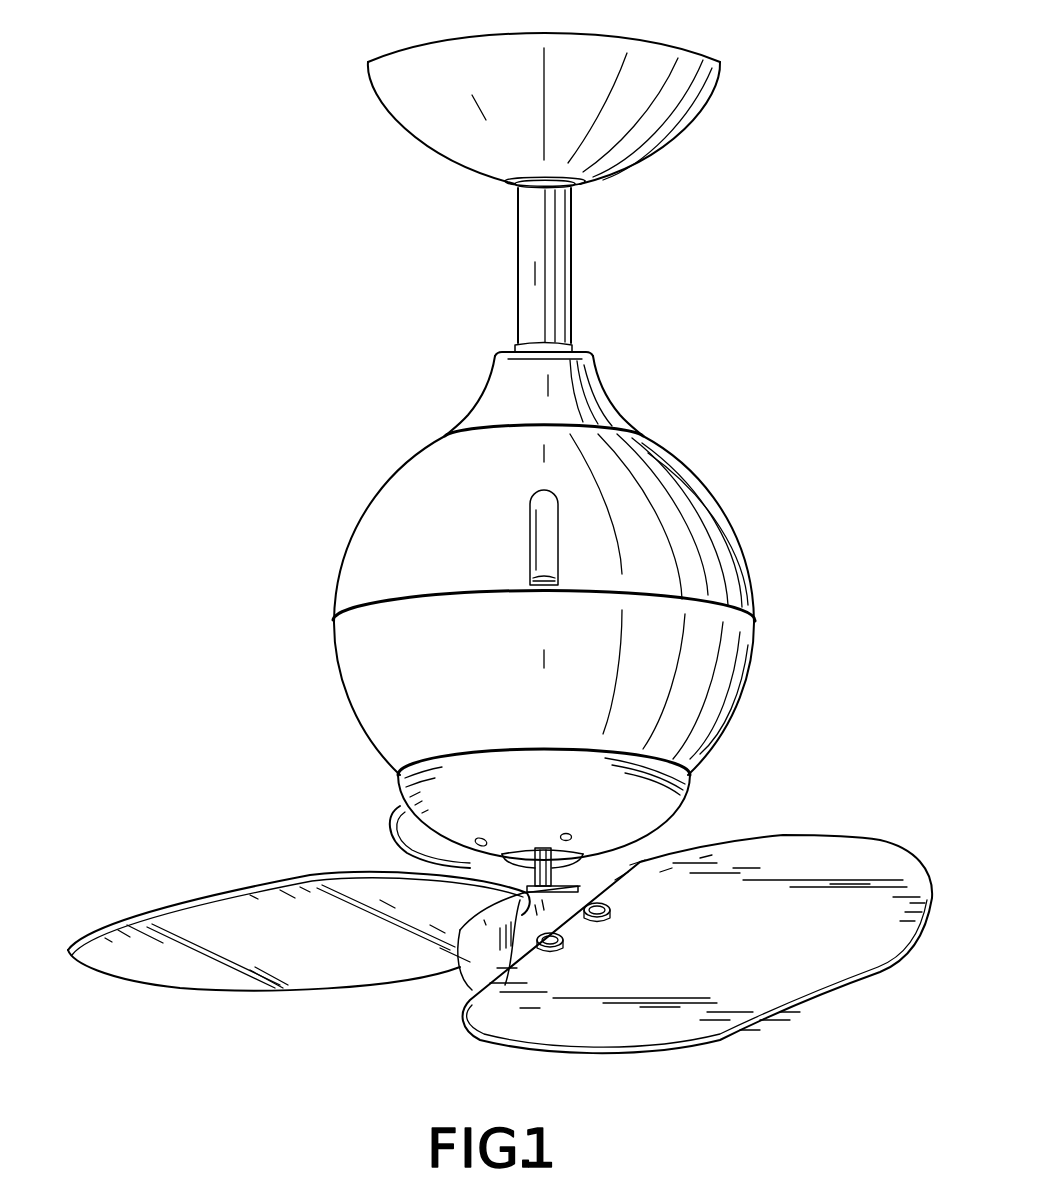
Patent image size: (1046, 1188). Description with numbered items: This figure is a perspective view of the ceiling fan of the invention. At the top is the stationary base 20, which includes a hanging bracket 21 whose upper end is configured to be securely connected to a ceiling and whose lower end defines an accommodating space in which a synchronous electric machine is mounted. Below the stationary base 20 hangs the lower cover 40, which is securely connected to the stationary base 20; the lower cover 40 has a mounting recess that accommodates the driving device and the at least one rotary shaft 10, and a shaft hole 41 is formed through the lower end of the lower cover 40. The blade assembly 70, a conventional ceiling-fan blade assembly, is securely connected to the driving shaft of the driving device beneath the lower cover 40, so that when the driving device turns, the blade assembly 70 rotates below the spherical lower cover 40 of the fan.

The rotary shaft 10 is at (521, 862).
The stationary base 20 is at (655, 373).
The hanging bracket 21 is at (468, 147).
The lower cover 40 is at (377, 697).
The shaft hole 41 is at (578, 856).
The blade assembly 70 is at (298, 965).